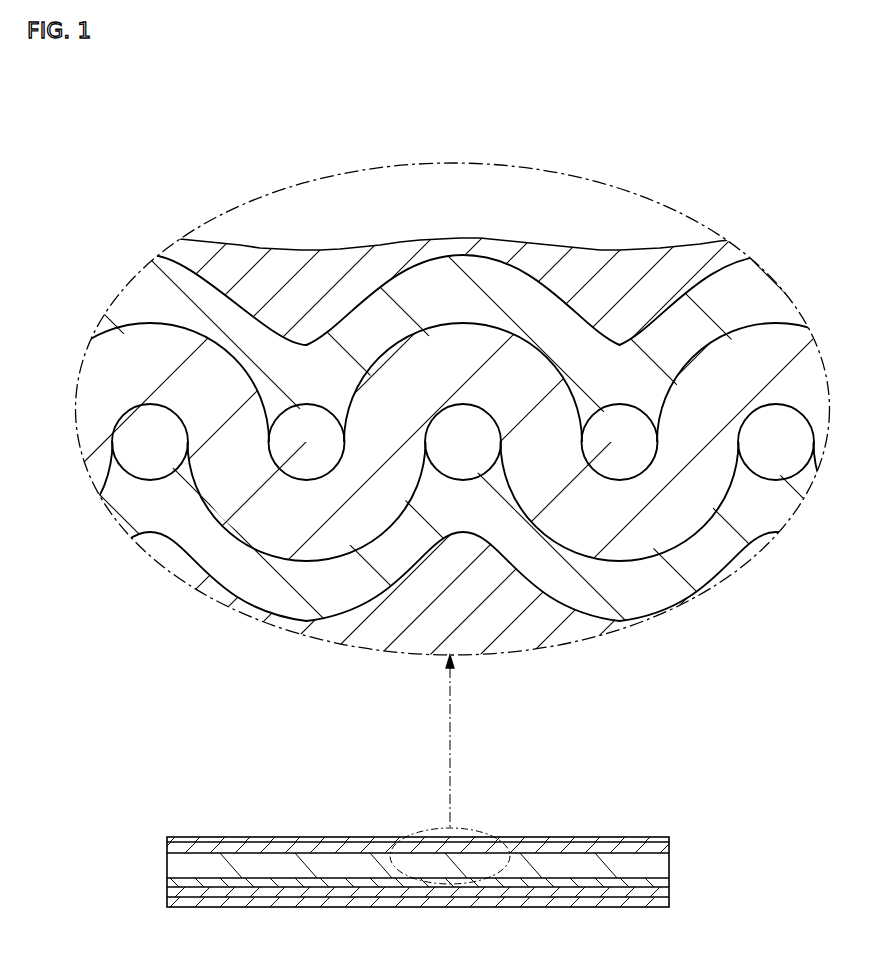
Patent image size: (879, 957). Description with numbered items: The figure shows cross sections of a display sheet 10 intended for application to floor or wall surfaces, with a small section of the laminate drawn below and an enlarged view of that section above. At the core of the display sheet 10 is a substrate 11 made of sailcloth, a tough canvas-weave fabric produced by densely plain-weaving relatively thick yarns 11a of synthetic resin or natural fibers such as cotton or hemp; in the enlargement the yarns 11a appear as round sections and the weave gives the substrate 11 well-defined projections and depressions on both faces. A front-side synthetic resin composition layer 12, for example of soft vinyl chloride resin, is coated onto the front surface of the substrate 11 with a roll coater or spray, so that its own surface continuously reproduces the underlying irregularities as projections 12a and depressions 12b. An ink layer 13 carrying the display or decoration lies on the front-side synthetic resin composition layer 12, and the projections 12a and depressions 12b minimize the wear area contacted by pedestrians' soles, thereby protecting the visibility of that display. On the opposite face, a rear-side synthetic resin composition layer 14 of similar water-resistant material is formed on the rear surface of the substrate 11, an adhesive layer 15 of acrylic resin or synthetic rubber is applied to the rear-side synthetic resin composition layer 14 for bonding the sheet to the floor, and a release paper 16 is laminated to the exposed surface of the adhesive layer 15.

The display sheet 10 is at (243, 787).
The substrate 11 is at (197, 517).
The yarns 11a is at (773, 458).
The front-side synthetic resin composition layer 12 is at (677, 320).
The projections 12a is at (157, 260).
The depressions 12b is at (302, 345).
The ink layer 13 is at (627, 280).
The rear-side synthetic resin composition layer 14 is at (633, 587).
The adhesive layer 15 is at (520, 620).
The release paper 16 is at (669, 902).